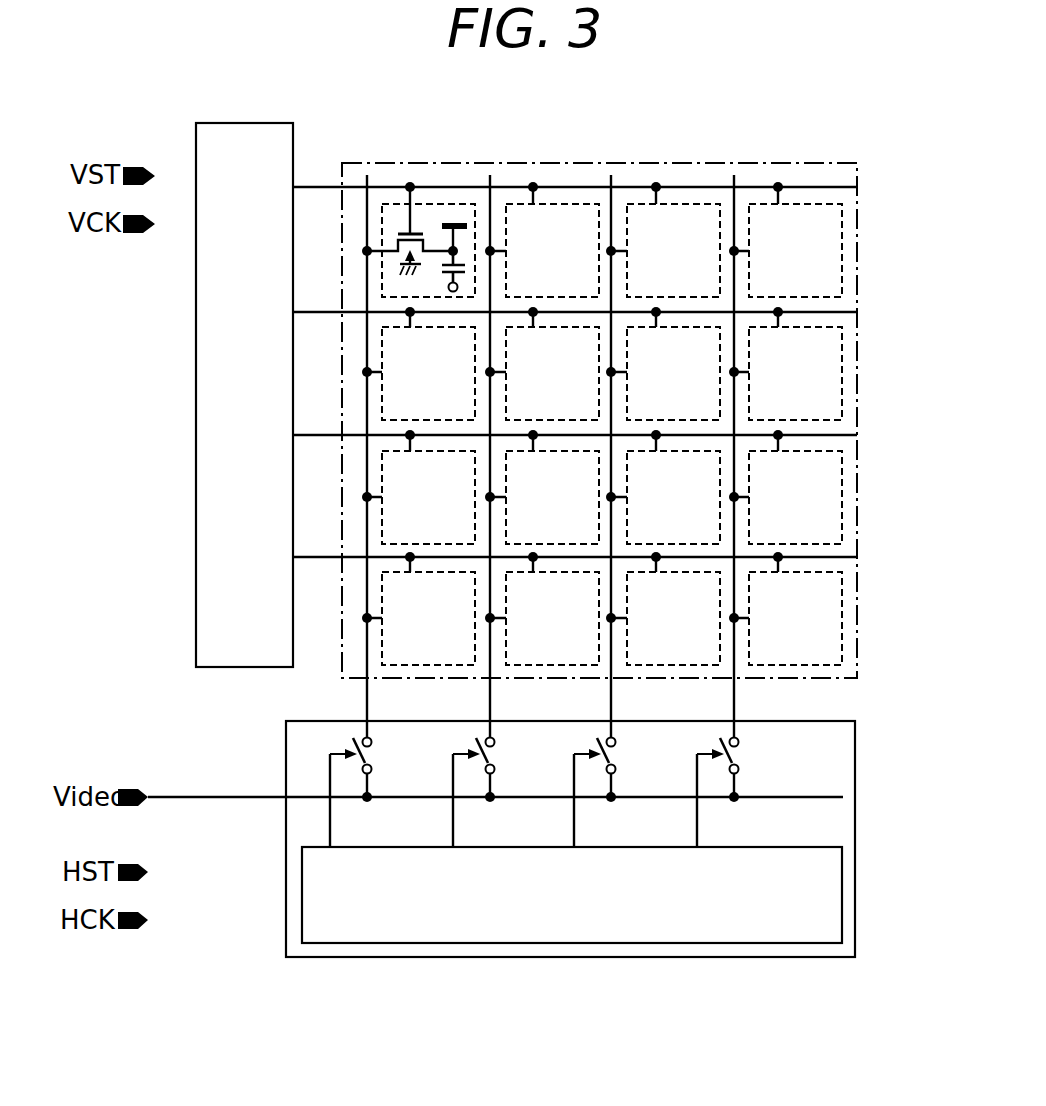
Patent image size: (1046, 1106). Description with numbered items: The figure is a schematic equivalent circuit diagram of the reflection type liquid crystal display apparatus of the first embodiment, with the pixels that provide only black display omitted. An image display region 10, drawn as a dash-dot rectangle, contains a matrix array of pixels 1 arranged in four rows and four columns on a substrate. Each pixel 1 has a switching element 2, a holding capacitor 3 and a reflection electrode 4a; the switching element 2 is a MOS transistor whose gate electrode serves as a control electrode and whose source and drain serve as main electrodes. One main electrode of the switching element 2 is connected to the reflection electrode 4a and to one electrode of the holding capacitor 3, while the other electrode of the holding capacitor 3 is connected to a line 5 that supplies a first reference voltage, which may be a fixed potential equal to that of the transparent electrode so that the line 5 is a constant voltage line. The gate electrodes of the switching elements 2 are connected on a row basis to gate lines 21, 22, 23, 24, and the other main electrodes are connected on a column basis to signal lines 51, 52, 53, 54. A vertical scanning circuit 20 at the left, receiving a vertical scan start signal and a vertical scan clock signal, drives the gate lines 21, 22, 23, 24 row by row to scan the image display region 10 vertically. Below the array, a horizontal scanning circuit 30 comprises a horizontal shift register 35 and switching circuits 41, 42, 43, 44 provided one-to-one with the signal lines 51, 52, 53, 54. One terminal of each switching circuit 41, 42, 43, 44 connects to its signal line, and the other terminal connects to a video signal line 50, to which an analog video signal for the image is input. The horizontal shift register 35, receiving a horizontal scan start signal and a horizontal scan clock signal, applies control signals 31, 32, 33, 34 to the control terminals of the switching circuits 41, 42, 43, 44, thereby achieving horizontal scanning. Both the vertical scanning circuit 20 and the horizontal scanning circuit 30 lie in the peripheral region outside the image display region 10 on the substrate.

The pixel 1 is at (432, 204).
The switching element 2 is at (398, 233).
The holding capacitor 3 is at (467, 271).
The reflection electrode 4a is at (456, 222).
The line 5 is at (448, 287).
The image display region 10 is at (822, 163).
The vertical scanning circuit 20 is at (257, 123).
The gate line 21 is at (319, 187).
The gate line 22 is at (316, 312).
The gate line 23 is at (316, 435).
The gate line 24 is at (316, 557).
The horizontal scanning circuit 30 is at (856, 863).
The control signal 31 is at (331, 825).
The control signal 32 is at (454, 825).
The control signal 33 is at (575, 825).
The control signal 34 is at (698, 825).
The horizontal shift register 35 is at (843, 910).
The switching circuit 41 is at (371, 752).
The switching circuit 42 is at (494, 752).
The switching circuit 43 is at (615, 752).
The switching circuit 44 is at (738, 752).
The video signal line 50 is at (212, 796).
The signal line 51 is at (368, 698).
The signal line 52 is at (491, 698).
The signal line 53 is at (612, 698).
The signal line 54 is at (735, 698).